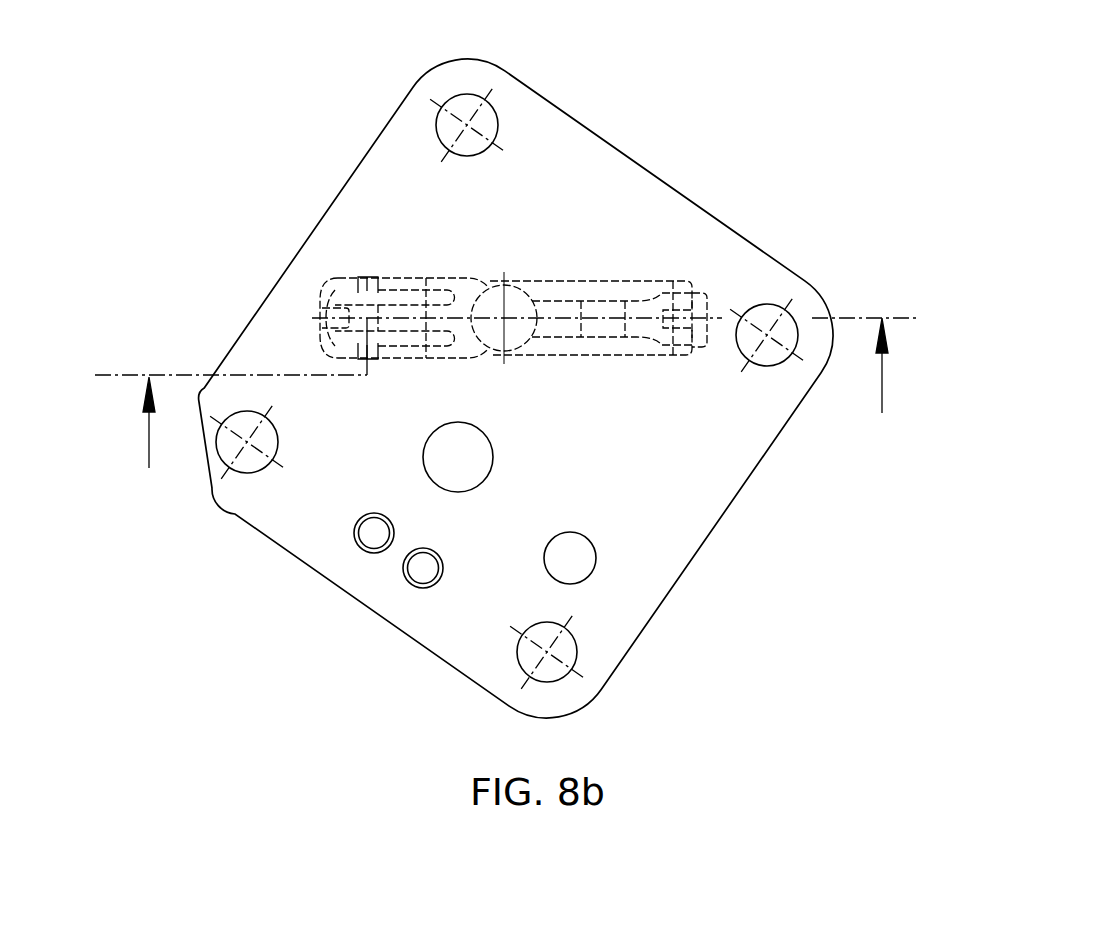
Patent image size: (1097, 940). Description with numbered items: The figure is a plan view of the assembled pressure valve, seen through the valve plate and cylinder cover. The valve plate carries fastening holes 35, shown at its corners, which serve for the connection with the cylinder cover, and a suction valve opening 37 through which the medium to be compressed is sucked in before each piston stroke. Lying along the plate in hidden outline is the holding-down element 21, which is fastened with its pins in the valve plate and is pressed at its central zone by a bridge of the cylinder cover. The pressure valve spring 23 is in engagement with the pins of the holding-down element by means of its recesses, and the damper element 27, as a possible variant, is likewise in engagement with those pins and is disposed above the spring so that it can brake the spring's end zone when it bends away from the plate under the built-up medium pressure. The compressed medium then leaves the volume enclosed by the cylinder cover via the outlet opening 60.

The fastening holes 35 is at (493, 120).
The pressure valve spring 23 is at (513, 295).
The damper element 27 is at (615, 290).
The holding-down element 21 is at (612, 327).
The suction valve opening 37 is at (465, 453).
The outlet opening 60 is at (573, 560).